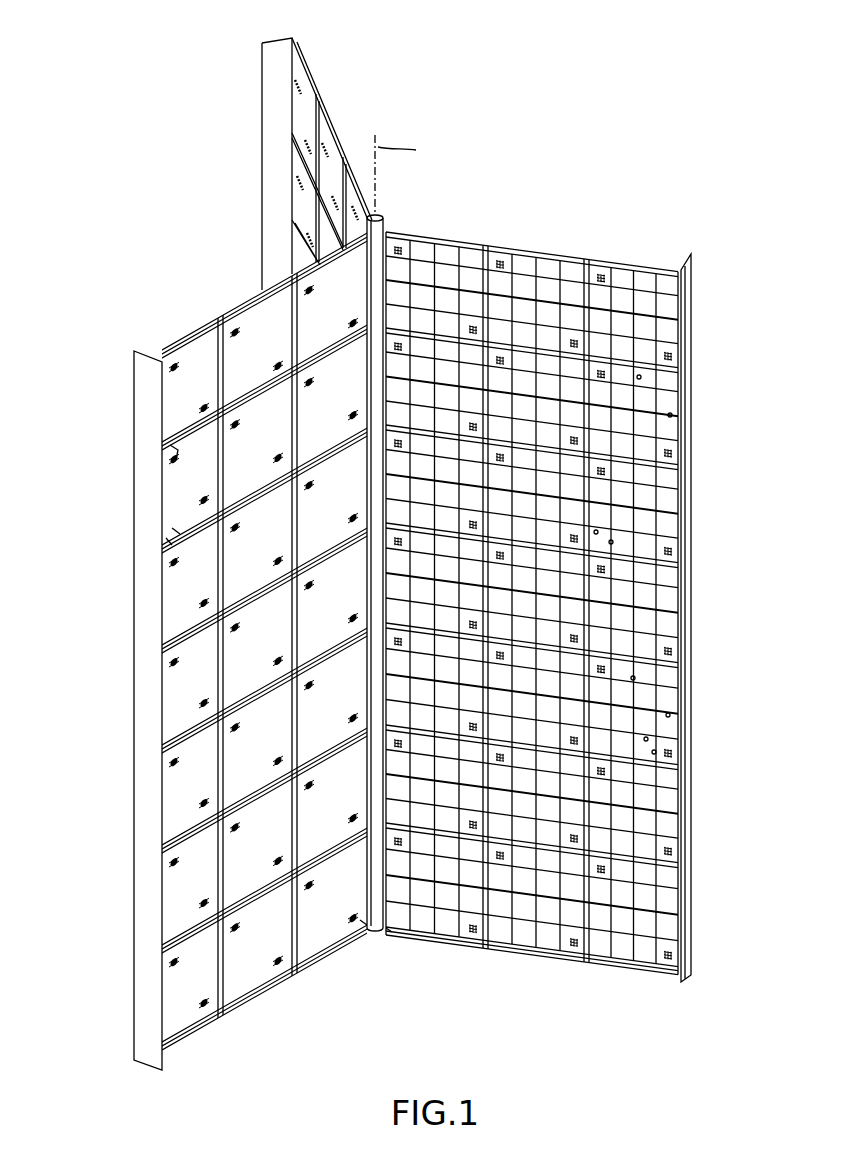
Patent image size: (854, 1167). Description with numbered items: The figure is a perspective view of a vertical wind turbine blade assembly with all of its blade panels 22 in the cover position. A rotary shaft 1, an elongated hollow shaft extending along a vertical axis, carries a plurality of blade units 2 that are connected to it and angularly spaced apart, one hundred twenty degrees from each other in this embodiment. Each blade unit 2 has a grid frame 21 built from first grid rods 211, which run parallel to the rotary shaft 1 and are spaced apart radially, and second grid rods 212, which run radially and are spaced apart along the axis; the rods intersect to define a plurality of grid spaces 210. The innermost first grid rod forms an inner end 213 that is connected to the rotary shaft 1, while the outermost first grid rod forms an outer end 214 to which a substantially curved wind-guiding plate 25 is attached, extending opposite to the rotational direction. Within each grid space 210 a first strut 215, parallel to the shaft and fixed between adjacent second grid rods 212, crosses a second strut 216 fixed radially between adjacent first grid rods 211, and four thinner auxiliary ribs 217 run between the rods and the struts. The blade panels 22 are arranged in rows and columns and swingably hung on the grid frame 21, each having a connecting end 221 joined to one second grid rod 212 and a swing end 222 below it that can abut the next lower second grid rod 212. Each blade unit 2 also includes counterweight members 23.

The rotary shaft 1 is at (385, 258).
The blade unit 2 is at (318, 66).
The grid frame 21 is at (503, 238).
The blade panel 22 is at (305, 162).
The counterweight member 23 is at (166, 541).
The wind-guiding plate 25 is at (279, 52).
The grid space 210 is at (545, 915).
The first grid rod 211 is at (485, 408).
The second grid rod 212 is at (649, 267).
The inner end 213 is at (353, 913).
The outer end 214 is at (172, 1020).
The first strut 215 is at (641, 377).
The second strut 216 is at (670, 417).
The auxiliary rib 217 is at (597, 533).
The connecting end 221 is at (172, 455).
The swing end 222 is at (178, 532).